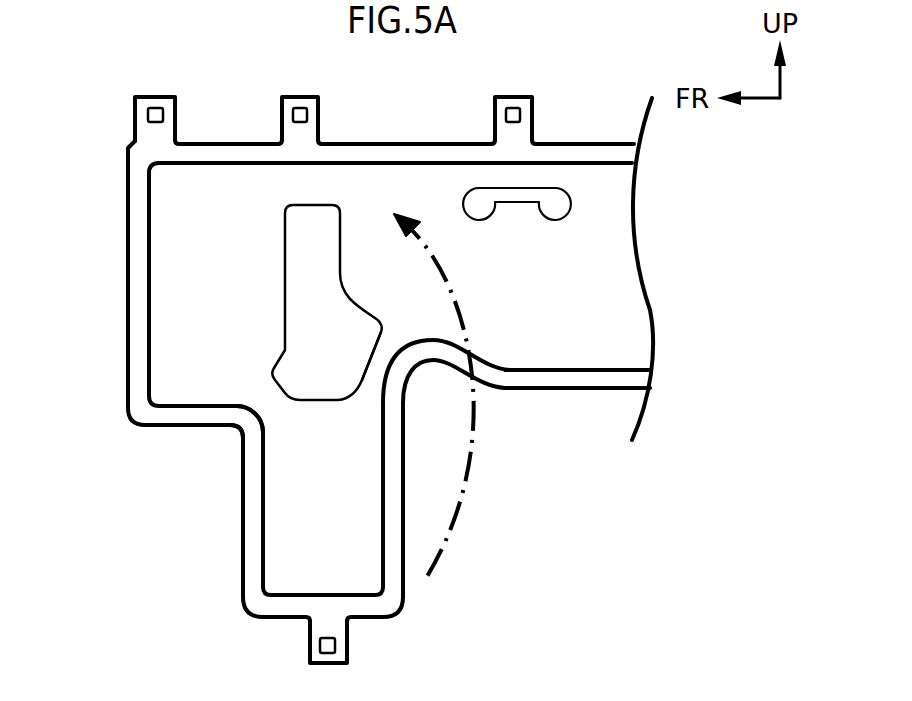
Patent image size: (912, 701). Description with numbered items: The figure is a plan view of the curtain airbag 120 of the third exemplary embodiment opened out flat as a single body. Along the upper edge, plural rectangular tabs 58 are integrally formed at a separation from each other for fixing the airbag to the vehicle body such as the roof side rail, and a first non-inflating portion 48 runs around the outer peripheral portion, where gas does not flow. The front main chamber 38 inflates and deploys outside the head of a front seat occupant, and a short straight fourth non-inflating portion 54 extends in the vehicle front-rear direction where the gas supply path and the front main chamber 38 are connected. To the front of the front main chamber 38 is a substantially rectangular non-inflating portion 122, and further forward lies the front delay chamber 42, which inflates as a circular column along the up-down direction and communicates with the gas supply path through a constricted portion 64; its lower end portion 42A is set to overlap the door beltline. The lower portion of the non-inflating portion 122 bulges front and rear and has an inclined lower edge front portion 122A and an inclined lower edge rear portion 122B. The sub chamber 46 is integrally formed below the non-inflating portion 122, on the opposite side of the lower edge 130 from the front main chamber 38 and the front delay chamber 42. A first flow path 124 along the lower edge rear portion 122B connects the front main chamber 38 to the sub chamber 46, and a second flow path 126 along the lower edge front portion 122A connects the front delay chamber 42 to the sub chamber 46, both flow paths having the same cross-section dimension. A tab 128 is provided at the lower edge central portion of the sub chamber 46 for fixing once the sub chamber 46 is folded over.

The front main chamber 38 is at (533, 330).
The front delay chamber 42 is at (195, 225).
The lower end portion of the front delay chamber 42A is at (163, 391).
The sub chamber 46 is at (283, 518).
The first non-inflating portion 48 is at (612, 382).
The fourth non-inflating portion 54 is at (517, 193).
The tabs 58 is at (150, 97).
The constricted portion 64 is at (318, 183).
The curtain airbag 120 is at (582, 482).
The non-inflating portion 122 is at (285, 264).
The lower edge front portion 122A is at (233, 427).
The lower edge rear portion 122B is at (360, 381).
The first flow path 124 is at (380, 371).
The second flow path 126 is at (267, 407).
The tab 128 is at (350, 638).
The lower edge 130 is at (183, 426).